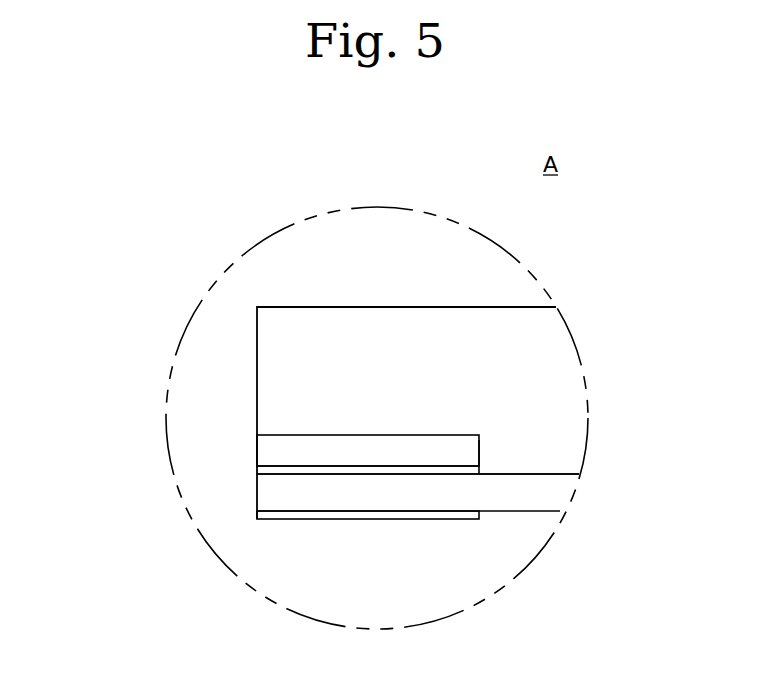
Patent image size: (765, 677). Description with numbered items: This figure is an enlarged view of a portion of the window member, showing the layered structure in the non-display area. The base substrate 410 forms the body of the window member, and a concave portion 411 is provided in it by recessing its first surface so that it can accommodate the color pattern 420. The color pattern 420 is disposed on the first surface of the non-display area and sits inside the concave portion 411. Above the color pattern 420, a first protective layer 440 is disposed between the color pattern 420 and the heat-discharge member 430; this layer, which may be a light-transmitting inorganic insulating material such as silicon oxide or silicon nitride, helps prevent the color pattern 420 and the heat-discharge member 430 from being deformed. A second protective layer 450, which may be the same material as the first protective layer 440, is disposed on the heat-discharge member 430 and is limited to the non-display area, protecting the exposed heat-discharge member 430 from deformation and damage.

The base substrate 410 is at (266, 369).
The concave portion 411 is at (486, 453).
The color pattern 420 is at (266, 453).
The heat-discharge member 430 is at (266, 493).
The first protective layer 440 is at (266, 470).
The second protective layer 450 is at (266, 515).